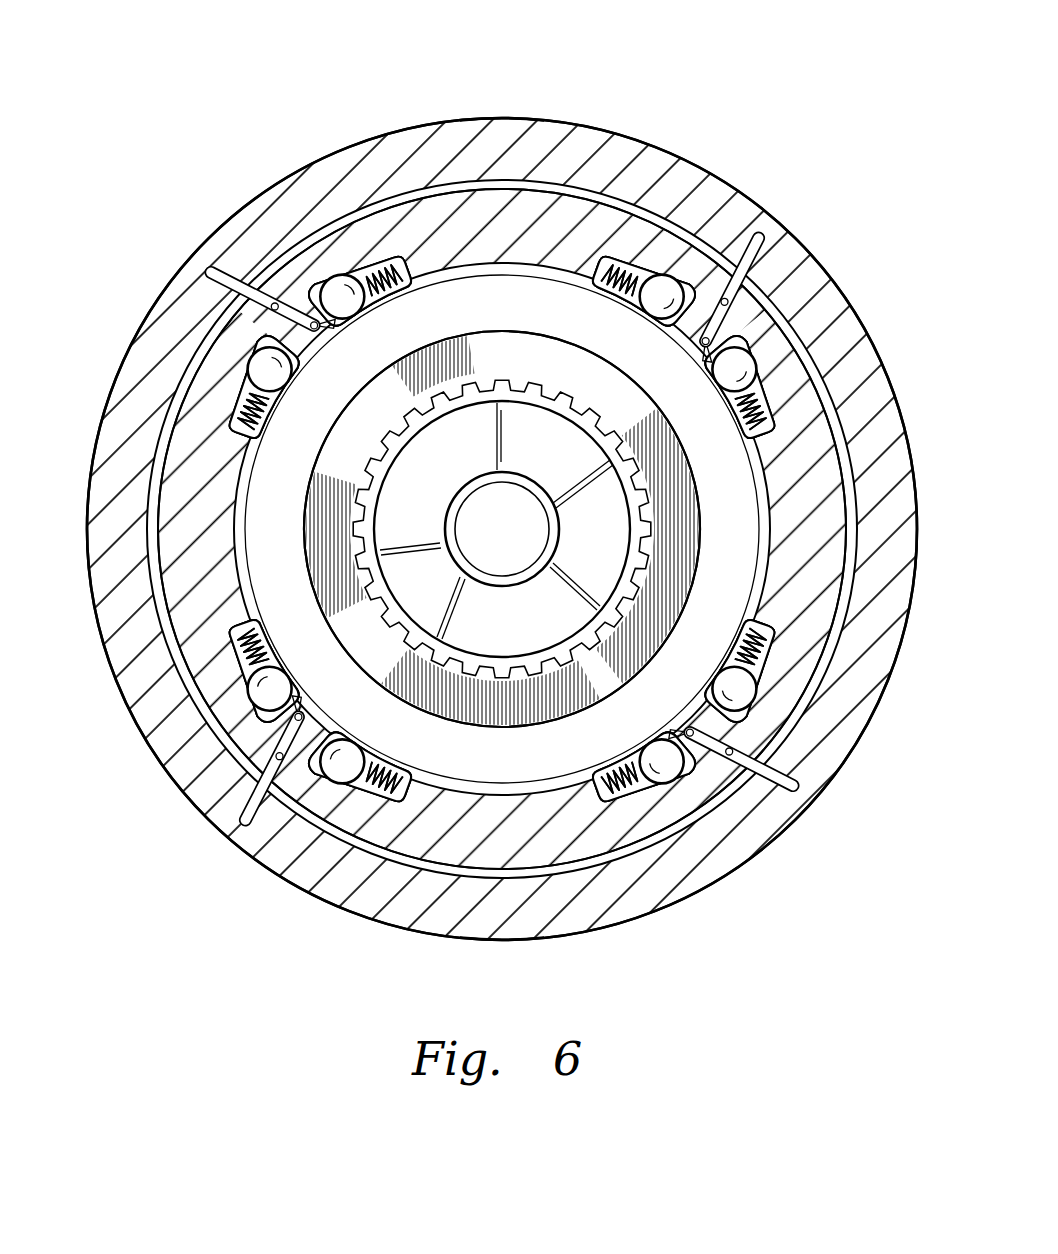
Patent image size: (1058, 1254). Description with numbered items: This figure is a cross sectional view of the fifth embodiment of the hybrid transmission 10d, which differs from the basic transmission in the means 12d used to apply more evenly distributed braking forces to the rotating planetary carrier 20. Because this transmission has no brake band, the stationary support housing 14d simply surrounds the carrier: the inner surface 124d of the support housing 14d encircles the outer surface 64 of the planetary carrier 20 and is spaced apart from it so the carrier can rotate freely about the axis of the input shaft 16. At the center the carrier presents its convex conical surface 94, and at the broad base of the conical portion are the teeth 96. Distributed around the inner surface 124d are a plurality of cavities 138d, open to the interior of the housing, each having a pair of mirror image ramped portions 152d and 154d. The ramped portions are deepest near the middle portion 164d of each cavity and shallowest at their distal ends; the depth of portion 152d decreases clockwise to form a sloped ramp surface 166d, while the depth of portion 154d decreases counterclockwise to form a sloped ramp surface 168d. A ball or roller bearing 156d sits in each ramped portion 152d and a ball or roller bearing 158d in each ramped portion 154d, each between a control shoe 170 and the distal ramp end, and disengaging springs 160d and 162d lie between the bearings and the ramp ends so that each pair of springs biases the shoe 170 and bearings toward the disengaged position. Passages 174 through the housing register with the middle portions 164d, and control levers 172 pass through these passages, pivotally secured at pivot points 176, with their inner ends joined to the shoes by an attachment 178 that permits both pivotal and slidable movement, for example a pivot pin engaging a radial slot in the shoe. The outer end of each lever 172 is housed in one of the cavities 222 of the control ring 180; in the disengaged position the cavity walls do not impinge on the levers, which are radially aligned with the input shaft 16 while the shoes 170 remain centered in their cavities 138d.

The hybrid transmission 10d is at (816, 100).
The means for applying more evenly distributed braking forces 12d is at (356, 248).
The support housing 14d is at (487, 190).
The input shaft 16 is at (515, 560).
The planetary carrier 20 is at (733, 554).
The outer surface 64 is at (535, 790).
The convex conical surface 94 is at (562, 458).
The teeth 96 is at (536, 372).
The inner surface 124d is at (507, 790).
The cavities 138d is at (275, 300).
The ramped portion 152d is at (412, 232).
The ramped portion 154d is at (547, 195).
The ball or roller bearing 156d is at (425, 268).
The ball or roller bearing 158d is at (652, 272).
The disengaging spring 160d is at (422, 266).
The disengaging spring 162d is at (575, 290).
The middle portion 164d is at (770, 260).
The sloped ramp surface 166d is at (338, 262).
The sloped ramp surface 168d is at (624, 262).
The control shoe 170 is at (292, 368).
The control lever 172 is at (737, 262).
The passage 174 is at (222, 265).
The pivot point 176 is at (200, 300).
The attachment 178 is at (432, 316).
The control ring 180 is at (497, 182).
The cavities 222 is at (766, 232).